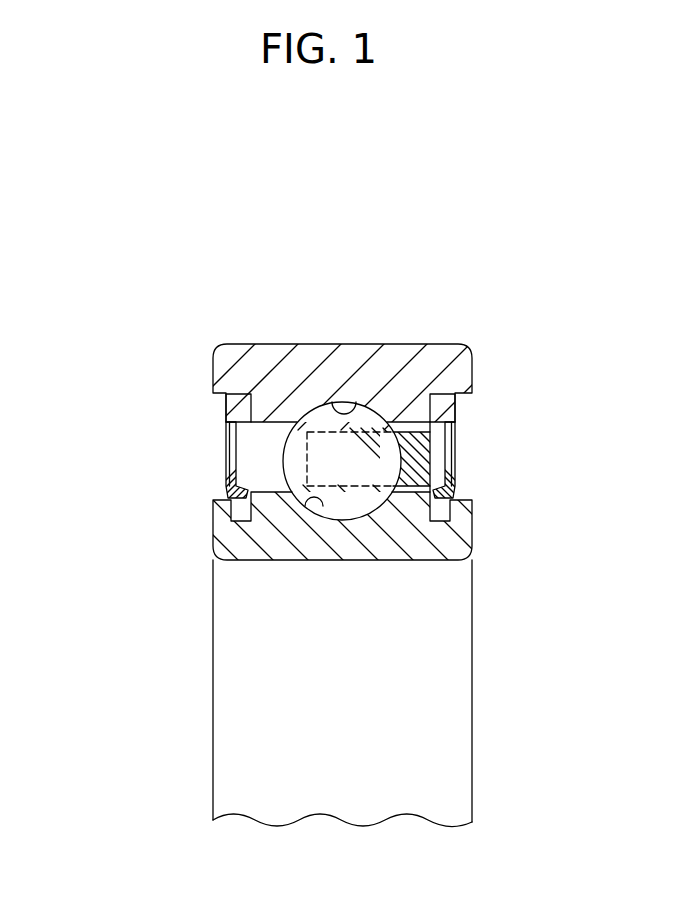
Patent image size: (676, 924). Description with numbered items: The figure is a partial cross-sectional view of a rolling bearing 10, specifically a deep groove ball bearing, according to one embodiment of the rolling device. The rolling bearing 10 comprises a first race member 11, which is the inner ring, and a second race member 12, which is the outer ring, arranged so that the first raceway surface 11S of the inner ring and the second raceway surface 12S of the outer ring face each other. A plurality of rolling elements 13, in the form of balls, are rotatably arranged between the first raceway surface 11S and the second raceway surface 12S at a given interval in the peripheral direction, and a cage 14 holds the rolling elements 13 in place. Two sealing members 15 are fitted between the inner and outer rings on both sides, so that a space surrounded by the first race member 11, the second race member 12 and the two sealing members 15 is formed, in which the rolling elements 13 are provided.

The rolling bearing 10 is at (303, 409).
The first race member 11 is at (423, 548).
The first raceway surface 11S is at (318, 512).
The second race member 12 is at (326, 336).
The second raceway surface 12S is at (323, 324).
The rolling elements 13 is at (346, 380).
The cage 14 is at (398, 371).
The sealing members 15 is at (341, 447).